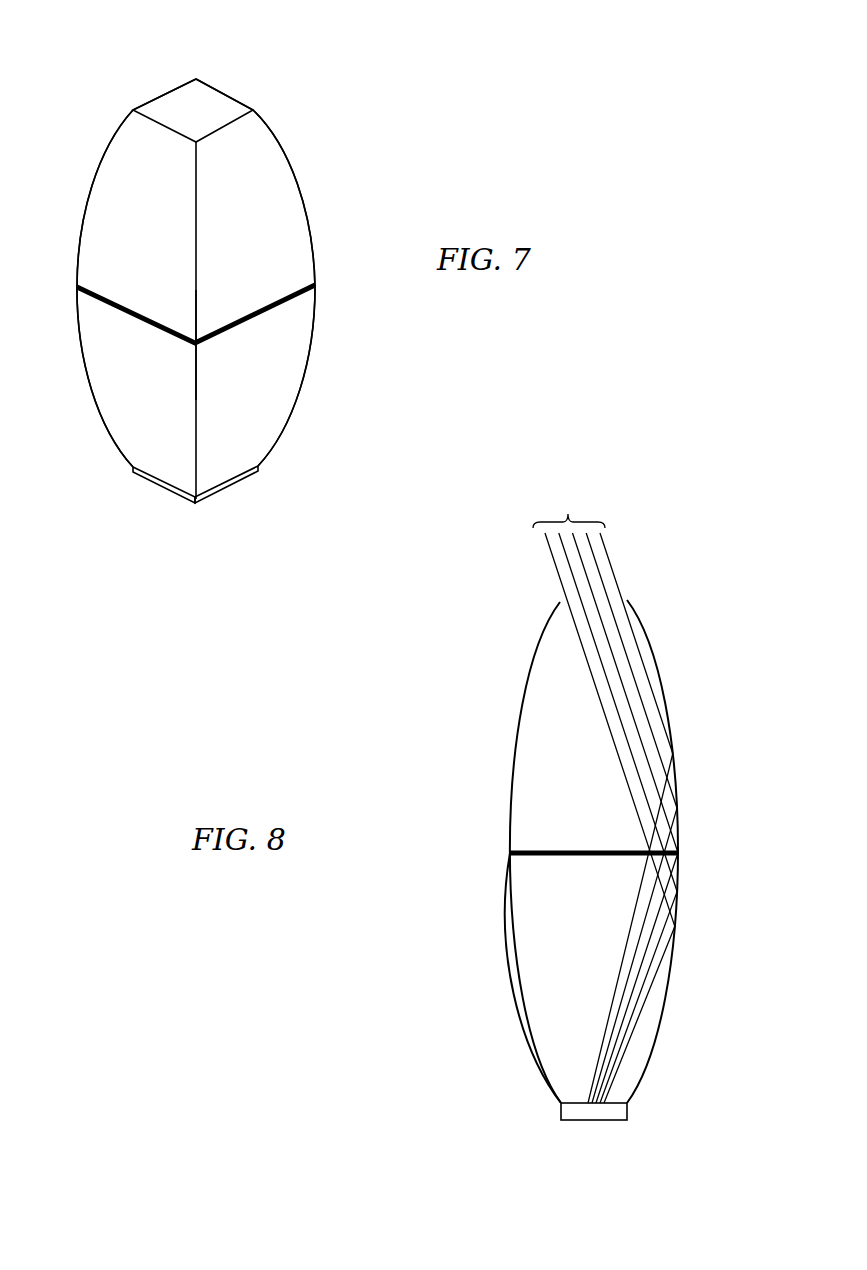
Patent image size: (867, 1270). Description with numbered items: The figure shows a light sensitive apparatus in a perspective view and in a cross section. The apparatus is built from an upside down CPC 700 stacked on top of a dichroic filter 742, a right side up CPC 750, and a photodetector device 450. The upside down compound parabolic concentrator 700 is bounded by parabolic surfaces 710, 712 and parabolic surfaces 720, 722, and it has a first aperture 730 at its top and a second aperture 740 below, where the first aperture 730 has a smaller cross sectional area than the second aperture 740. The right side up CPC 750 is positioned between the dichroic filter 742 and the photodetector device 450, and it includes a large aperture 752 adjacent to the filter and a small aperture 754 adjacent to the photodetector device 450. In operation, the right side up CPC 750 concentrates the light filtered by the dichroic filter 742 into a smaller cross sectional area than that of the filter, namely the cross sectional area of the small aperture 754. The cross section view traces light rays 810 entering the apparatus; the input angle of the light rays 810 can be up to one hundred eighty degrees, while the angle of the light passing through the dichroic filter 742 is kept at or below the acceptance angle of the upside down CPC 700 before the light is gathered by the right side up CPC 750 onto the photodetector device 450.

In FIG. 7, the upside down CPC 700 is at (372, 195).
In FIG. 8, the upside down CPC 700 is at (475, 743).
In FIG. 7, the parabolic surface 710 is at (145, 173).
In FIG. 7, the parabolic surface 712 is at (243, 100).
In FIG. 7, the parabolic surface 720 is at (243, 159).
In FIG. 7, the parabolic surface 722 is at (160, 97).
In FIG. 7, the first aperture 730 is at (202, 103).
In FIG. 7, the second aperture 740 is at (267, 305).
In FIG. 7, the dichroic filter 742 is at (315, 286).
In FIG. 8, the dichroic filter 742 is at (510, 853).
In FIG. 7, the right side up CPC 750 is at (342, 401).
In FIG. 8, the right side up CPC 750 is at (482, 963).
In FIG. 7, the large aperture 752 is at (230, 333).
In FIG. 7, the small aperture 754 is at (167, 477).
In FIG. 7, the photodetector device 450 is at (252, 478).
In FIG. 8, the photodetector device 450 is at (561, 1108).
In FIG. 8, the light rays 810 is at (568, 500).